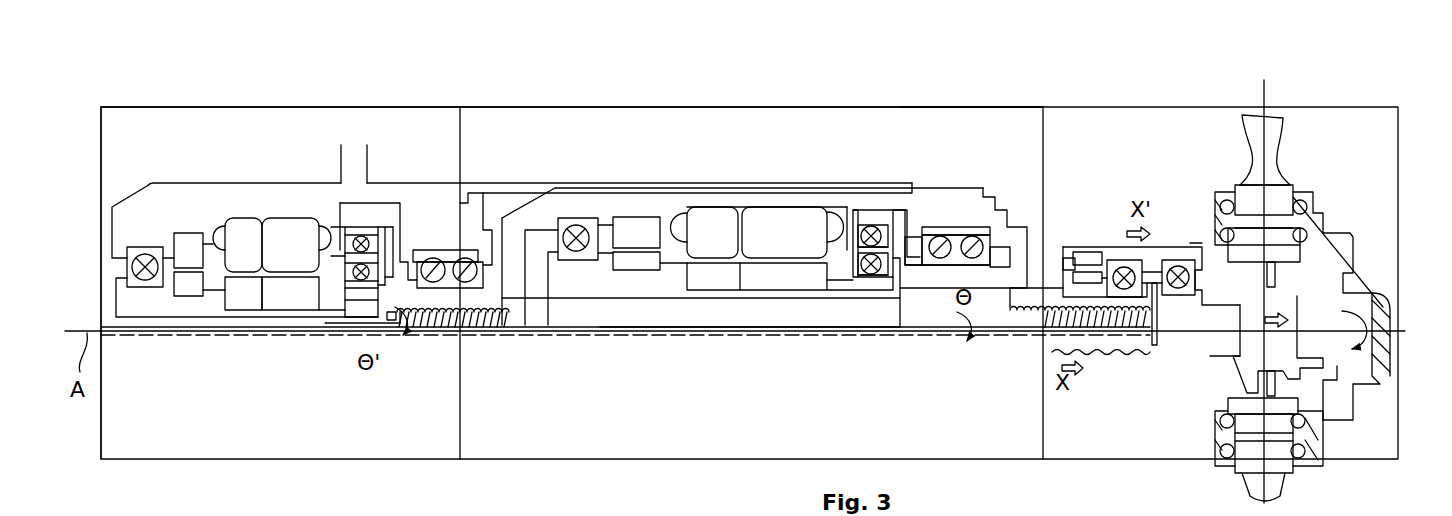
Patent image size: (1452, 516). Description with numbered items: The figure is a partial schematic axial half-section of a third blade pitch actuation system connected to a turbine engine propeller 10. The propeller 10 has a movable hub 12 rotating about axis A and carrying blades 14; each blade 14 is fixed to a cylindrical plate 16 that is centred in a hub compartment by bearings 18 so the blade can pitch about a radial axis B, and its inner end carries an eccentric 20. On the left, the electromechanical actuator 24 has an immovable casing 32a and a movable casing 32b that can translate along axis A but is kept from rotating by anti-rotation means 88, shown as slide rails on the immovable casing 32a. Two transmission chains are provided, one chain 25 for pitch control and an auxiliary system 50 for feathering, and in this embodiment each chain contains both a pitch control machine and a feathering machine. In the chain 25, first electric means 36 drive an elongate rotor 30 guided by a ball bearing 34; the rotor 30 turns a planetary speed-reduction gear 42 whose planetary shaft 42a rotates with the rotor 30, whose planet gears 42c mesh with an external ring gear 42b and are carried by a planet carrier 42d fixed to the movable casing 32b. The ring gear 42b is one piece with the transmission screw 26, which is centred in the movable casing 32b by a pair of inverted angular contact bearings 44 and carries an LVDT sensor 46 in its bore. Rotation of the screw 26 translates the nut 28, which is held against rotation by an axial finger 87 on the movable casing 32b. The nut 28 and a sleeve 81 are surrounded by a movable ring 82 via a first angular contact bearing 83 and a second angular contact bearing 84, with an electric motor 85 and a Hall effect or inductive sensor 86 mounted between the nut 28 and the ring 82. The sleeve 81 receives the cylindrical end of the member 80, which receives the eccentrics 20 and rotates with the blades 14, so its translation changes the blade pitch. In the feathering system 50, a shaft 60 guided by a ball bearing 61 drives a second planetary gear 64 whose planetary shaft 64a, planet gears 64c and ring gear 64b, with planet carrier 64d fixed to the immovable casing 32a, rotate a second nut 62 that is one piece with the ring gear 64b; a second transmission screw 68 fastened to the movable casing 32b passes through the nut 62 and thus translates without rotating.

The propeller 10 is at (1306, 280).
The hub 12 is at (1350, 230).
The blades 14 is at (1243, 140).
The plate 16 is at (1292, 185).
The bearings 18 is at (1330, 416).
The eccentric 20 is at (1328, 386).
The electromechanical actuator 24 is at (535, 117).
The transmission chain for controlling the blade pitch 25 is at (915, 107).
The transmission screw 26 is at (1120, 347).
The nut 28 is at (1063, 331).
The rotor 30 is at (640, 285).
The immovable casing 32a is at (320, 197).
The movable casing 32b is at (925, 200).
The bearing 34 is at (578, 253).
The first electric means 36 is at (838, 157).
The speed-reduction gear 42 is at (873, 265).
The planetary shaft 42a is at (872, 278).
The external ring gear 42b is at (872, 220).
The planet gears 42c is at (860, 258).
The planet carrier 42d is at (857, 248).
The anti-friction bearings 44 is at (940, 236).
The LVDT sensor 46 is at (578, 336).
The auxiliary system for feathering 50 is at (187, 106).
The shaft 60 is at (158, 310).
The anti-friction bearing 61 is at (462, 258).
The second nut 62 is at (435, 300).
The speed-reduction gear 64 is at (282, 235).
The planetary shaft 64a is at (360, 296).
The external ring gear 64b is at (366, 235).
The planet gears 64c is at (352, 290).
The planet carrier 64d is at (344, 276).
The second transmission screw 68 is at (506, 326).
The member 80 is at (1222, 317).
The sleeve 81 is at (1168, 322).
The movable ring 82 is at (1148, 228).
The first angular contact anti-friction bearing 83 is at (1112, 260).
The second angular contact anti-friction bearing 84 is at (1173, 259).
The electric motor 85 is at (1082, 258).
The sensor 86 is at (1063, 265).
The means for preventing rotation of the nut 87 is at (1006, 215).
The anti-rotation means 88 is at (532, 200).